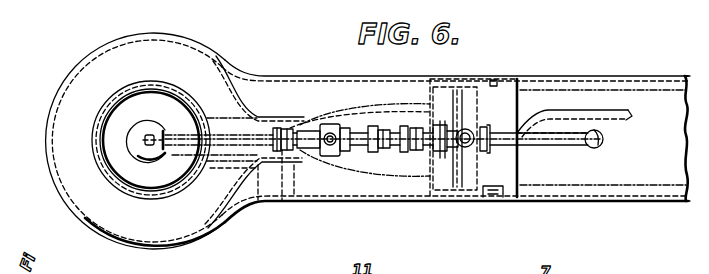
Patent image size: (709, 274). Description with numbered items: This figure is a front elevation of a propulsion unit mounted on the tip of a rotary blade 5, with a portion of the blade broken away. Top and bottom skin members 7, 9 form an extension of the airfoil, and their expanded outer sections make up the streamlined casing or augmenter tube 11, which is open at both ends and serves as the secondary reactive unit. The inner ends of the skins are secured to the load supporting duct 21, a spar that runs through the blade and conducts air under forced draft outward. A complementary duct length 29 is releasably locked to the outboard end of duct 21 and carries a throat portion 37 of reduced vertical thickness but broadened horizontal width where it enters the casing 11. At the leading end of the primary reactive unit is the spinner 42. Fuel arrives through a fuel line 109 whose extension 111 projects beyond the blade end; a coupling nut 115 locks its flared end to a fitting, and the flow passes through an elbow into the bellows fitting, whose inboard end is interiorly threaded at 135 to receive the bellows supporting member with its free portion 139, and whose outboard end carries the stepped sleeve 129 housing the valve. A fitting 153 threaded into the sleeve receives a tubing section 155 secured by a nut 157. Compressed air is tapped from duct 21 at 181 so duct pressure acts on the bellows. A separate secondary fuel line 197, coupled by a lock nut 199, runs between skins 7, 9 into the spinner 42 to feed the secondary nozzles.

The blade 5 is at (687, 76).
The top skin member 7 is at (286, 76).
The bottom skin member 9 is at (314, 196).
The casing or augmenter tube 11 is at (62, 96).
The load supporting duct 21 is at (628, 88).
The duct length 29 is at (413, 98).
The throat portion 37 is at (258, 116).
The spinner 42 is at (157, 152).
The fuel line 109 is at (560, 118).
The fuel feed extension 111 is at (510, 131).
The coupling nut 115 is at (492, 128).
The sleeve 129 is at (310, 127).
The interiorly threaded inboard end 135 is at (356, 128).
The free extending portion 139 is at (373, 126).
The fitting 153 is at (294, 170).
The tubing section 155 is at (258, 166).
The nut 157 is at (282, 150).
The tap into compressed air duct 181 is at (600, 148).
The fuel line 197 is at (363, 166).
The lock nut 199 is at (417, 147).